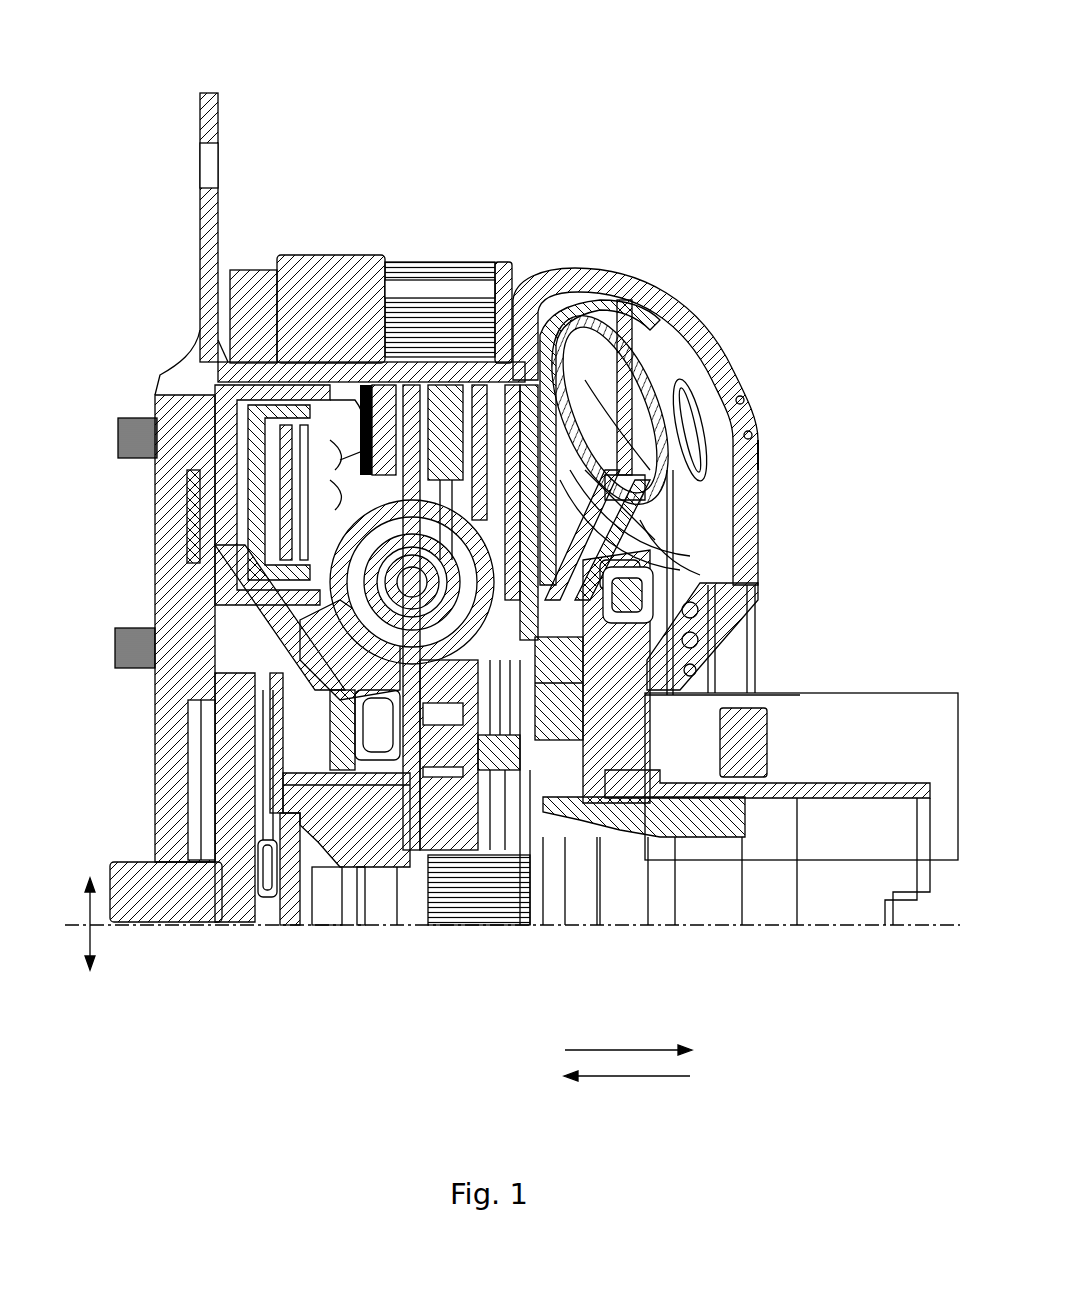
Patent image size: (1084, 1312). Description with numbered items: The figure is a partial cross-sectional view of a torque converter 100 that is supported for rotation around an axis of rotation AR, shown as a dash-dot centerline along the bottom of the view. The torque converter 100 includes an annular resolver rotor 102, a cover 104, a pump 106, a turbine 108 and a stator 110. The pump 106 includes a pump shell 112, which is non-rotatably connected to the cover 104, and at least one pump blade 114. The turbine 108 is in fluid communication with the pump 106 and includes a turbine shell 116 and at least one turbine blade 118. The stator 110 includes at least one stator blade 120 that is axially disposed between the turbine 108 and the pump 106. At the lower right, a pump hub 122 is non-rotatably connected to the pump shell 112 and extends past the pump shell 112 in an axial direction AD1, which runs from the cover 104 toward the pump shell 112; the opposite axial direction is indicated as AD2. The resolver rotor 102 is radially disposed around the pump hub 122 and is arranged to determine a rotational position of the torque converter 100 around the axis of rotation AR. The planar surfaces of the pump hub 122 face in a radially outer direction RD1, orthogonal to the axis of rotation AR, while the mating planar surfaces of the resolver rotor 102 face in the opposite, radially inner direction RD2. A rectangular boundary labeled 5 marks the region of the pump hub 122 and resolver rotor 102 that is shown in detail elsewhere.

The torque converter 100 is at (700, 62).
The annular resolver rotor 102 is at (770, 730).
The cover 104 is at (213, 738).
The pump 106 is at (733, 347).
The turbine 108 is at (596, 262).
The stator 110 is at (760, 600).
The pump shell 112 is at (750, 388).
The pump blade 114 is at (715, 470).
The turbine shell 116 is at (548, 280).
The turbine blade 118 is at (683, 290).
The stator blade 120 is at (700, 537).
The pump hub 122 is at (825, 783).
The detail region 5 is at (898, 693).
The axis of rotation AR is at (800, 925).
The radially outer direction RD1 is at (88, 902).
The radially inner direction RD2 is at (92, 952).
The axial direction AD1 is at (604, 1048).
The axial direction 2 AD2 is at (626, 1078).